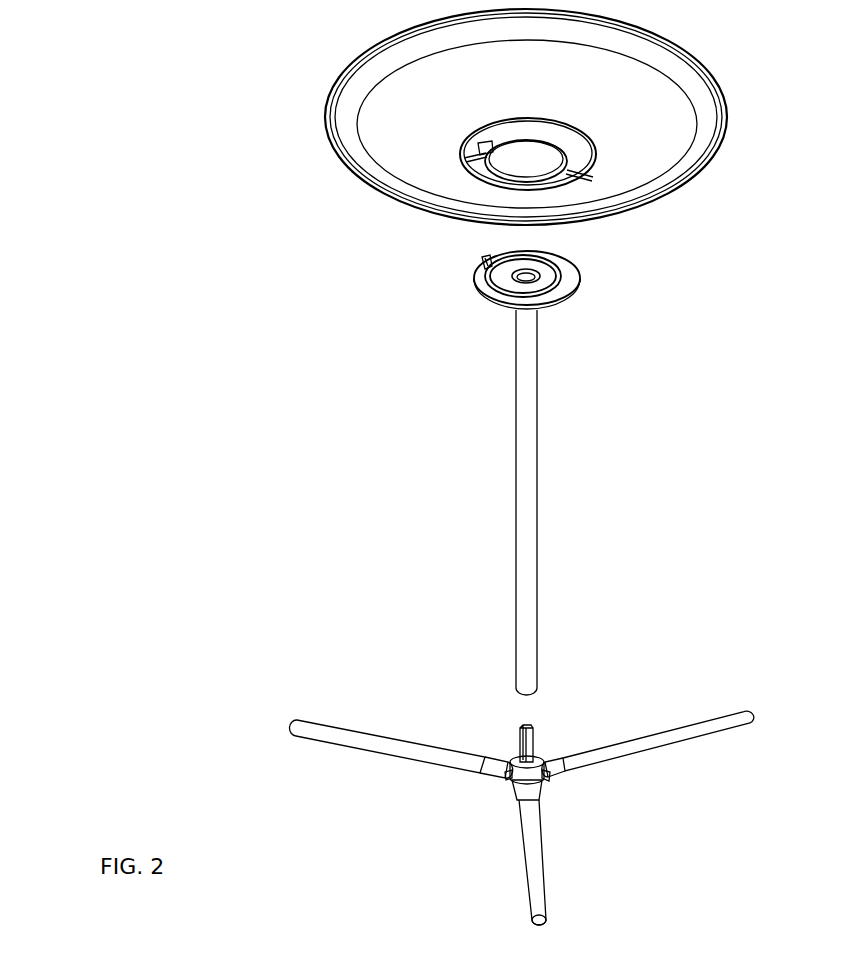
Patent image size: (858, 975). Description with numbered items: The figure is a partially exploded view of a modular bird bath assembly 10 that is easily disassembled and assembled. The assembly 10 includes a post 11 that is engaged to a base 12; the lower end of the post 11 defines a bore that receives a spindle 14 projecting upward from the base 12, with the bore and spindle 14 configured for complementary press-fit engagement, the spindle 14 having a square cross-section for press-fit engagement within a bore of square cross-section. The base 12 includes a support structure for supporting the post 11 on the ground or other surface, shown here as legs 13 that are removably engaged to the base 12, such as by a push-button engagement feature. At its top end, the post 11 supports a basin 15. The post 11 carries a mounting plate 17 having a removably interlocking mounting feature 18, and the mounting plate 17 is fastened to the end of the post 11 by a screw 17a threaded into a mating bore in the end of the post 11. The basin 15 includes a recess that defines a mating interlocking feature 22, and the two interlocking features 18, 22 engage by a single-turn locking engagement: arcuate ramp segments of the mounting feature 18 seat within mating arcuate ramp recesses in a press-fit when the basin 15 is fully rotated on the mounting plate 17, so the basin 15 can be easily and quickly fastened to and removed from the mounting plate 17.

The bird bath assembly 10 is at (473, 505).
The post 11 is at (530, 519).
The base 12 is at (553, 777).
The legs 13 is at (645, 740).
The spindle 14 is at (518, 752).
The basin 15 is at (705, 107).
The mounting plate 17 is at (574, 299).
The screw 17a is at (536, 272).
The mounting feature 18 is at (483, 262).
The mating interlocking feature 22 is at (488, 150).